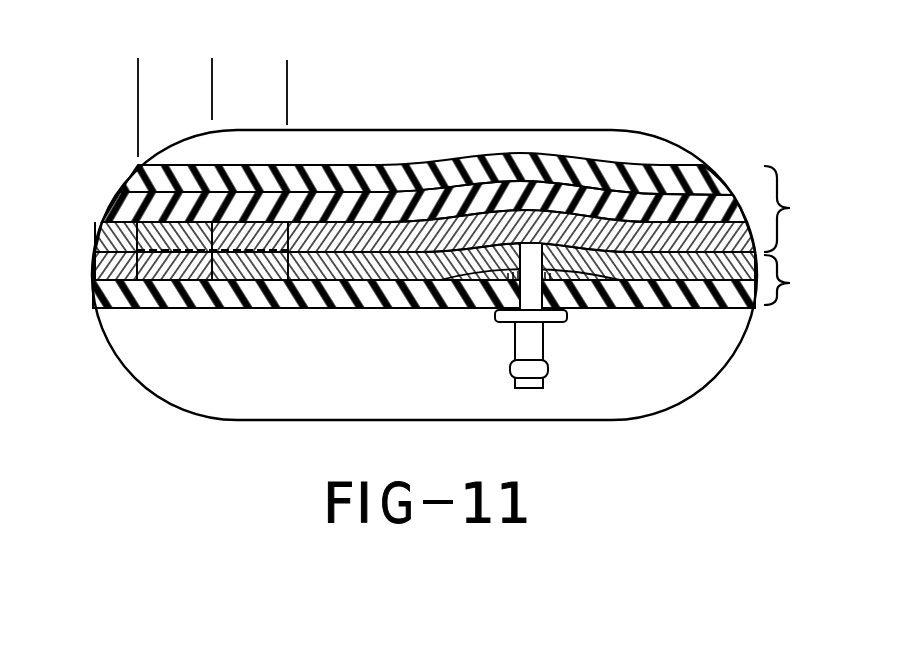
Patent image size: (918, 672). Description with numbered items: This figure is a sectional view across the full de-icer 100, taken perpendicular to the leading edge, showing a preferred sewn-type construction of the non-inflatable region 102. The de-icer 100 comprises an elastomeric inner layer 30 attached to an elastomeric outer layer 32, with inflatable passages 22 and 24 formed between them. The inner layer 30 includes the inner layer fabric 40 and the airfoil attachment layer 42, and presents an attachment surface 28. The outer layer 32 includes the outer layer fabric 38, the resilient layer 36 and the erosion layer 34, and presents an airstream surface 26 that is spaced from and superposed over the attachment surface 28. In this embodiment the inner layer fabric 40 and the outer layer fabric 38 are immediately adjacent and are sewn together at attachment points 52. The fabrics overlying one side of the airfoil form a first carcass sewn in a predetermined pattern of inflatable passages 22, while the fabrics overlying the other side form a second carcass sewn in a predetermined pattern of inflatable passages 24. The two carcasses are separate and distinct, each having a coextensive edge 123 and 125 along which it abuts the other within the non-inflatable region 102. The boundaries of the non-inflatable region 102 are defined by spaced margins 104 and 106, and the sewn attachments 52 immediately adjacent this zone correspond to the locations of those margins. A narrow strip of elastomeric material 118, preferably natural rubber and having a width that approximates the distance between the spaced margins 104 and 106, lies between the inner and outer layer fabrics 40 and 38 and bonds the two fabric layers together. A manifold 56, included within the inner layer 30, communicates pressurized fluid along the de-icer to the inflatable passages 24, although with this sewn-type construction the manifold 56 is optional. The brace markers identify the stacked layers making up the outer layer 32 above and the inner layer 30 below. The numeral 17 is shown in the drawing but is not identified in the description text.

The de-icer 100 is at (452, 95).
The boundary line 17 is at (211, 67).
The non-inflatable region 102 is at (228, 164).
The spaced margin 104 is at (288, 68).
The spaced margin 106 is at (136, 93).
The coextensive edge 125 is at (205, 236).
The attachment points 52 is at (293, 241).
The erosion layer 34 is at (134, 178).
The resilient layer 36 is at (118, 200).
The outer layer fabric 38 is at (100, 233).
The inner layer fabric 40 is at (100, 265).
The airfoil attachment layer 42 is at (105, 298).
The inflatable passages 22 is at (121, 280).
The inflatable passages 24 is at (655, 280).
The airstream surface 26 is at (664, 163).
The attachment surface 28 is at (722, 316).
The inner layer 30 is at (796, 280).
The outer layer 32 is at (796, 209).
The manifold 56 is at (497, 290).
The narrow strip of elastomeric material 118 is at (243, 258).
The coextensive edge 123 is at (222, 258).